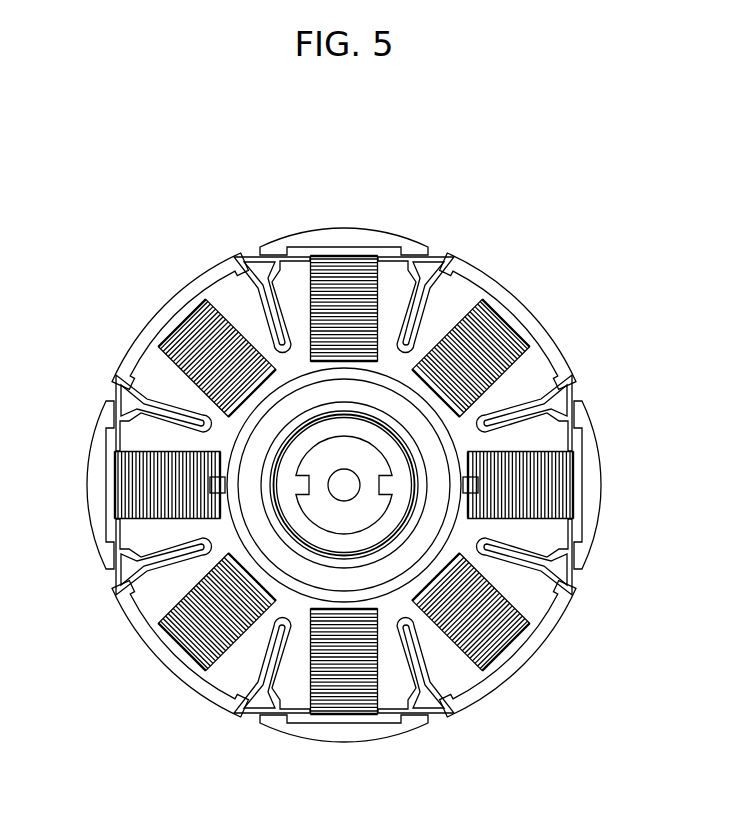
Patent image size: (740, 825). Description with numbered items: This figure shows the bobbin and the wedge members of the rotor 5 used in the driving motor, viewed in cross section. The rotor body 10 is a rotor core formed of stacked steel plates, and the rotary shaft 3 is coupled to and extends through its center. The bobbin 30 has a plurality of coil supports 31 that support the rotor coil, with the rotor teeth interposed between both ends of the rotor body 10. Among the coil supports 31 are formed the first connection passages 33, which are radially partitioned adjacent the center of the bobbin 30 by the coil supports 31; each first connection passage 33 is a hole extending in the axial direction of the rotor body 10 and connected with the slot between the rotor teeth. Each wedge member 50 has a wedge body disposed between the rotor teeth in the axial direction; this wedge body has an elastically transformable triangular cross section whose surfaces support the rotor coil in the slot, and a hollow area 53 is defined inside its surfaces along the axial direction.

The rotary shaft 3 is at (367, 460).
The rotor 5 is at (351, 171).
The rotor body 10 is at (517, 688).
The bobbin 30 is at (172, 662).
The coil support 31 is at (233, 650).
The first connection passage 33 is at (153, 535).
The wedge member 50 is at (165, 428).
The hollow area 53 is at (133, 400).